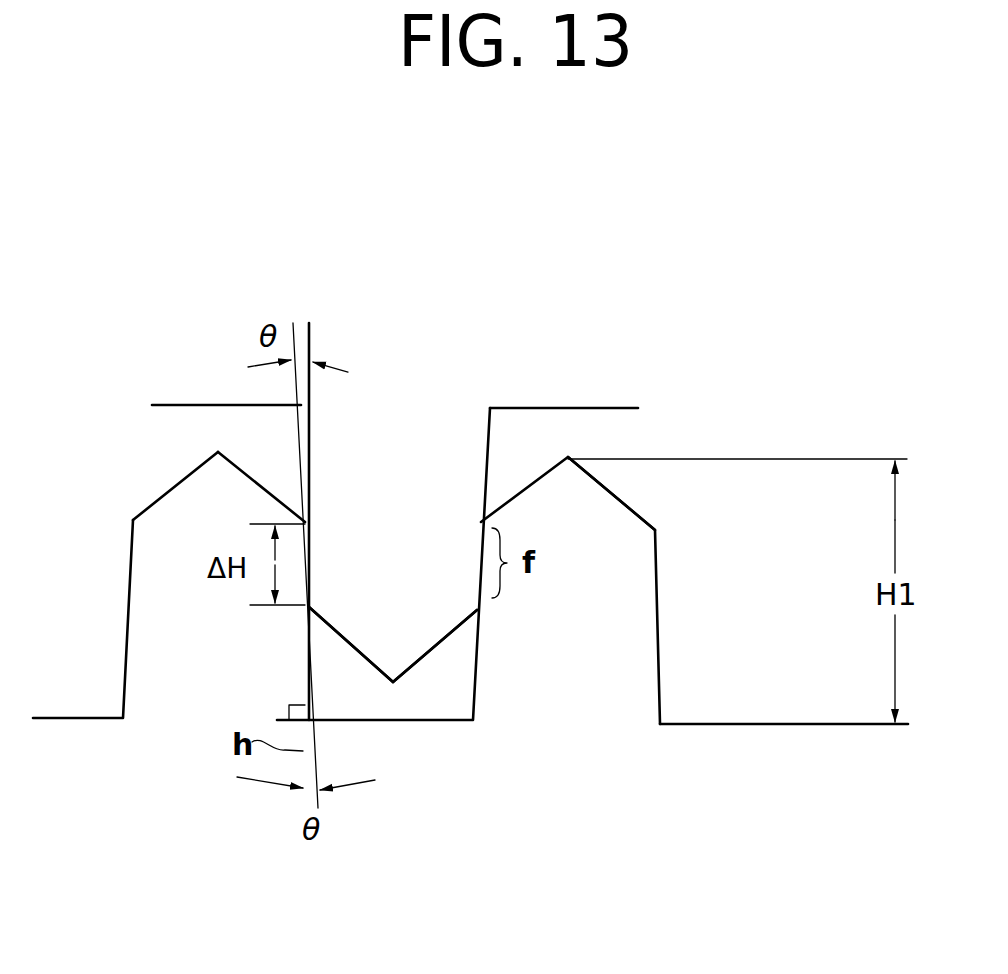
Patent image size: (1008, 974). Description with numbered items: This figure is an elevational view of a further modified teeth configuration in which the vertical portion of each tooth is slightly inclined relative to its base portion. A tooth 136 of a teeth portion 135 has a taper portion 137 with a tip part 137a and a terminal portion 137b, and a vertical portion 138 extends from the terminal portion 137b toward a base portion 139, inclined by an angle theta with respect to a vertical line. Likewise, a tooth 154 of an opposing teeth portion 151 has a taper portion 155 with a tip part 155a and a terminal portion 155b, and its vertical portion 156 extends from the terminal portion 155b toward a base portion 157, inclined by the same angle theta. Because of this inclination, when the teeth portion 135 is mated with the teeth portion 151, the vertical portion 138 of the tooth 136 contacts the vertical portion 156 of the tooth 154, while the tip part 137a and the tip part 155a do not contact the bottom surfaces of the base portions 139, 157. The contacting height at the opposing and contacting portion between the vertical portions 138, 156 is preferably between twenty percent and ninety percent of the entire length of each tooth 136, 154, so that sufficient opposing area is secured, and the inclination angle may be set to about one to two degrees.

The teeth portion 135 is at (516, 736).
The tooth 136 is at (193, 716).
The taper portion 137 is at (531, 485).
The tip part 137a is at (219, 451).
The terminal portion 137b is at (306, 522).
The vertical portion 138 is at (476, 693).
The base portion 139 is at (459, 725).
The teeth portion 151 is at (451, 381).
The tooth 154 is at (390, 423).
The taper portion 155 is at (438, 647).
The tip part 155a is at (393, 688).
The terminal portion 155b is at (360, 584).
The vertical portion 156 is at (302, 464).
The base portion 157 is at (518, 407).